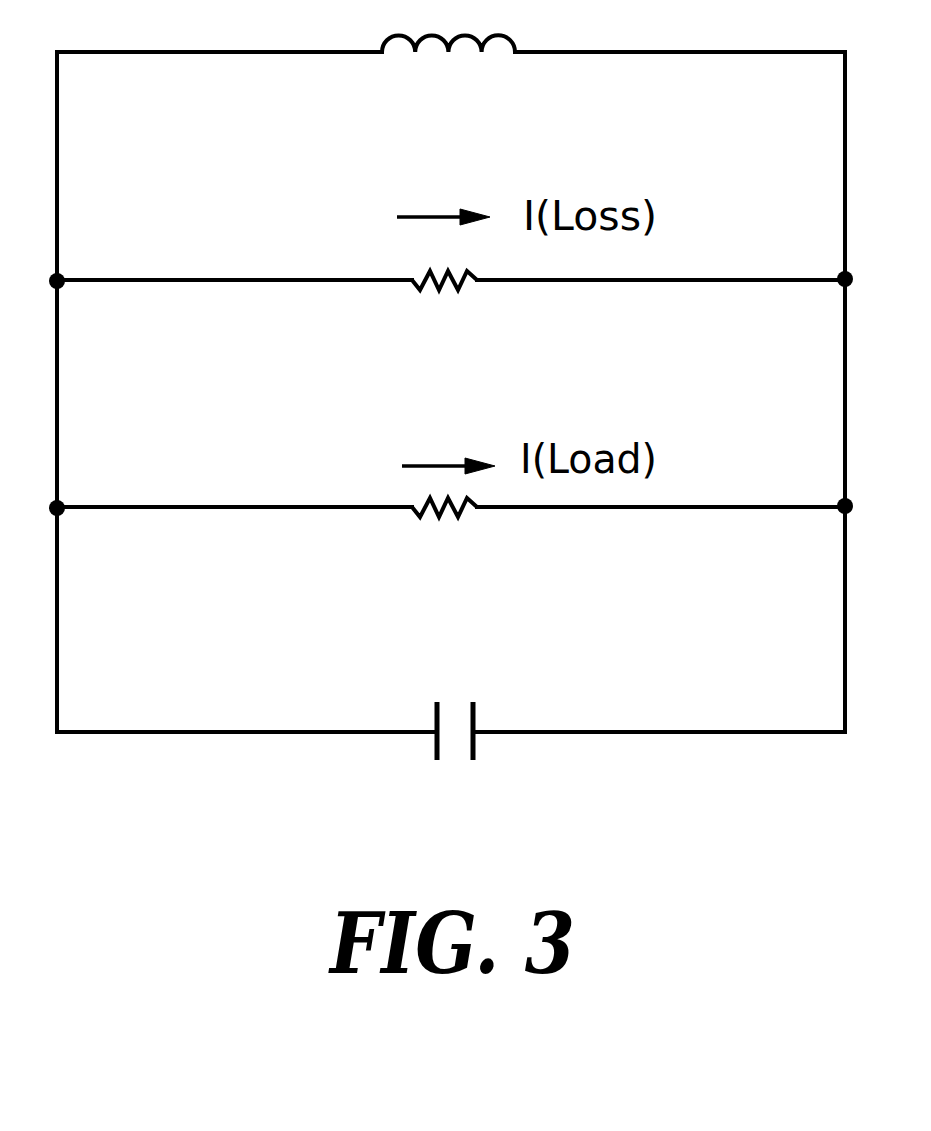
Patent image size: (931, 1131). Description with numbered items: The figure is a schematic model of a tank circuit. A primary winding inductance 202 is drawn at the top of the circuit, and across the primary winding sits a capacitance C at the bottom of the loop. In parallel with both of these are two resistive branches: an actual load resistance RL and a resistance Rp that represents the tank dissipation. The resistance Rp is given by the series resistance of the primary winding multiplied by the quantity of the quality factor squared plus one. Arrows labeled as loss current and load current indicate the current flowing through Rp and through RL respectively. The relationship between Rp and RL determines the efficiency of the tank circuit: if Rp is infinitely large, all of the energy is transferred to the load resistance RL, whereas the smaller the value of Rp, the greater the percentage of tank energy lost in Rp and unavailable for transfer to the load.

The primary winding inductance 202 is at (448, 87).
The tank dissipation resistance Rp is at (444, 310).
The load resistance RL is at (446, 541).
The capacitance C is at (455, 765).